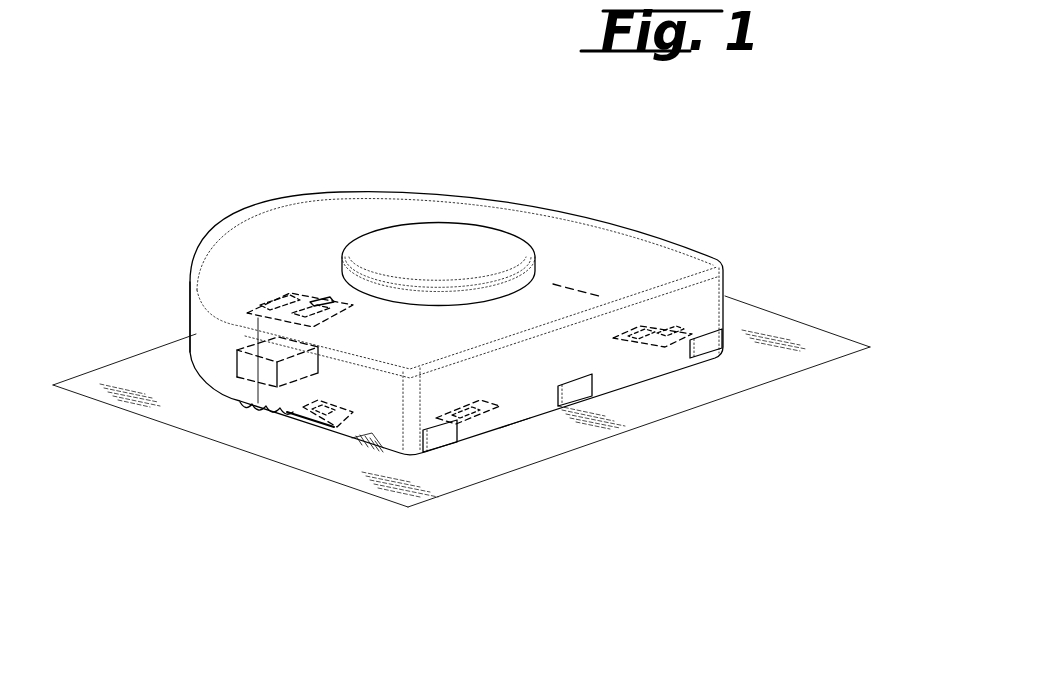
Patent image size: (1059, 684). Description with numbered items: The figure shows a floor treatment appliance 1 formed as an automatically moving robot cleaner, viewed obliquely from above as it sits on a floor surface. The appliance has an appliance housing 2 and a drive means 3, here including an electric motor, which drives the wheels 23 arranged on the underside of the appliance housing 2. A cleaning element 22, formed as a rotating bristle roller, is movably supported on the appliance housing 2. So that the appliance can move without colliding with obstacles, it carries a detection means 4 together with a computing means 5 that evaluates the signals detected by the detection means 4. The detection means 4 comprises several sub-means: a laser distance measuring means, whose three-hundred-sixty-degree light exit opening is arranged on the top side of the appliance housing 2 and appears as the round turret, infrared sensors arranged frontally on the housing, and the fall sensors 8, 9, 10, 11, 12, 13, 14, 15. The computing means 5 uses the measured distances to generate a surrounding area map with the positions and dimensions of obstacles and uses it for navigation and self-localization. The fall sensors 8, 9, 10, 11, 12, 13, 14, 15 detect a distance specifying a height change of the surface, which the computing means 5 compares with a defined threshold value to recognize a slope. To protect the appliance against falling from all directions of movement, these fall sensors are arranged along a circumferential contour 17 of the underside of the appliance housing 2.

The floor treatment appliance 1 is at (755, 181).
The appliance housing 2 is at (601, 217).
The drive means 3 is at (236, 365).
The detection means 4 is at (323, 300).
The computing means 5 is at (236, 322).
The fall sensor 8 is at (487, 432).
The fall sensor 9 is at (690, 328).
The fall sensor 10 is at (279, 298).
The fall sensor 11 is at (313, 423).
The fall sensor 12 is at (508, 424).
The fall sensor 13 is at (638, 323).
The fall sensor 14 is at (313, 295).
The fall sensor 15 is at (300, 413).
The circumferential contour 17 is at (190, 300).
The cleaning element 22 is at (367, 440).
The wheels 23 is at (245, 408).